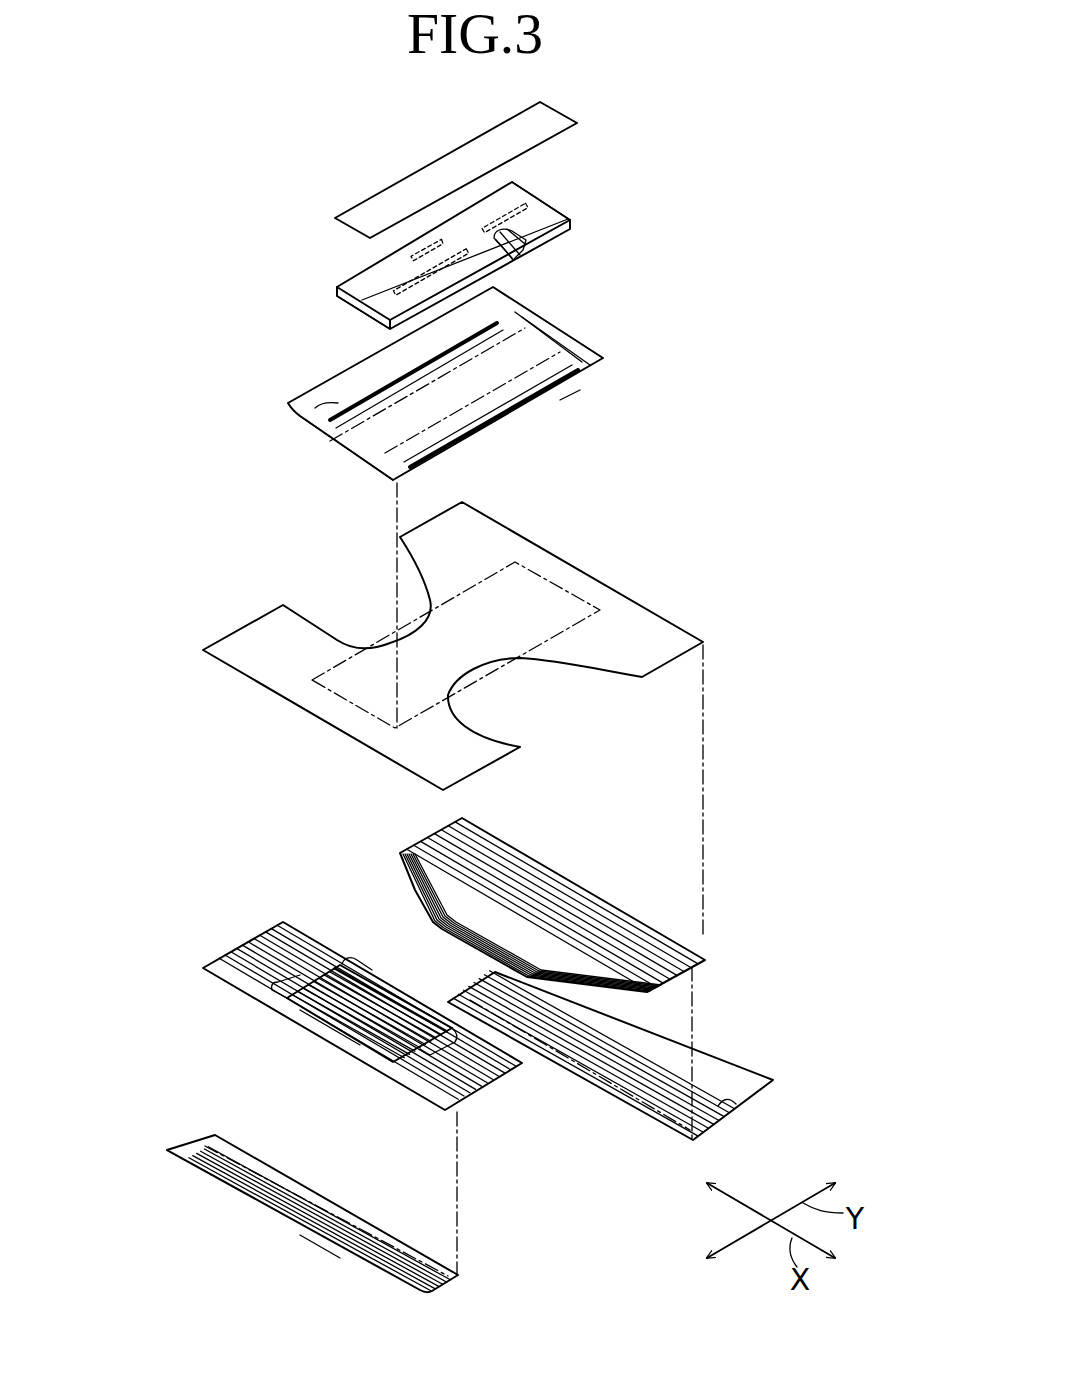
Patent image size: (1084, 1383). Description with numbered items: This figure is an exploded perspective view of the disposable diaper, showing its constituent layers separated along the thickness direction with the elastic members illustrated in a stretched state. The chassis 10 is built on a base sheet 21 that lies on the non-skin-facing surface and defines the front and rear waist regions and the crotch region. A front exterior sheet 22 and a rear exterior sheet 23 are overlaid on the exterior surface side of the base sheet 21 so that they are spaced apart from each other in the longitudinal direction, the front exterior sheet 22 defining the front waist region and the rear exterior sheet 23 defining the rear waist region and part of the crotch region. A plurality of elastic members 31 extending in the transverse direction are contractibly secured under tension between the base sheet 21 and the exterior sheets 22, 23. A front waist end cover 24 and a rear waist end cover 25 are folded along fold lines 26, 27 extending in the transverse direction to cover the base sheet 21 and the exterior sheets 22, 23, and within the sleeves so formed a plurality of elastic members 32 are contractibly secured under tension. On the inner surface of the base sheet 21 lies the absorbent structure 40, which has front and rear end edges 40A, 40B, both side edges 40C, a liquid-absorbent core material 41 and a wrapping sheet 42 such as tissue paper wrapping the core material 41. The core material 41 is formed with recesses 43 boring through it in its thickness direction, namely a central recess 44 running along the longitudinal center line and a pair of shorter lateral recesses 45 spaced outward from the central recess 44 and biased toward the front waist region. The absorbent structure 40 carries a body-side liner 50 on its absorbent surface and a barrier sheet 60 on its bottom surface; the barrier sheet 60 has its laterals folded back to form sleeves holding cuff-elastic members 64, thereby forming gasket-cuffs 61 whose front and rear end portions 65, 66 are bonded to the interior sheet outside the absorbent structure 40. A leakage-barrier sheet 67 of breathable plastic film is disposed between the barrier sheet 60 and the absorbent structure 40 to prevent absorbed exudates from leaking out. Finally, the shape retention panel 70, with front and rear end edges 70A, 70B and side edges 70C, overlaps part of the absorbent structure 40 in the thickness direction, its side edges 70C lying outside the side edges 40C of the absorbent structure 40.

The chassis 10 is at (509, 892).
The base sheet 21 is at (568, 578).
The front exterior sheet 22 is at (367, 1067).
The rear exterior sheet 23 is at (445, 893).
The front waist end cover 24 is at (312, 1218).
The rear waist end cover 25 is at (491, 1130).
The fold line 26 is at (335, 1238).
The fold line 27 is at (725, 1100).
The elastic members 31 is at (443, 845).
The elastic members 32 is at (603, 1070).
The absorbent structure 40 is at (430, 254).
The front end edge 40A is at (370, 320).
The rear end edge 40B is at (562, 204).
The side edges 40C is at (487, 195).
The liquid-absorbent core material 41 is at (520, 254).
The wrapping sheet 42 is at (548, 217).
The recesses 43 is at (362, 267).
The central recess 44 is at (395, 288).
The lateral recesses 45 is at (420, 252).
The body-side liner 50 is at (505, 142).
The barrier sheet 60 is at (461, 387).
The gasket-cuffs 61 is at (345, 388).
The cuff-elastic members 64 is at (335, 405).
The front end portion 65 is at (352, 455).
The rear end portion 66 is at (550, 322).
The leakage-barrier sheet 67 is at (553, 345).
The shape retention panel 70 is at (315, 1019).
The front end edge 70A is at (340, 1032).
The rear end edge 70B is at (368, 970).
The side edges 70C is at (290, 987).